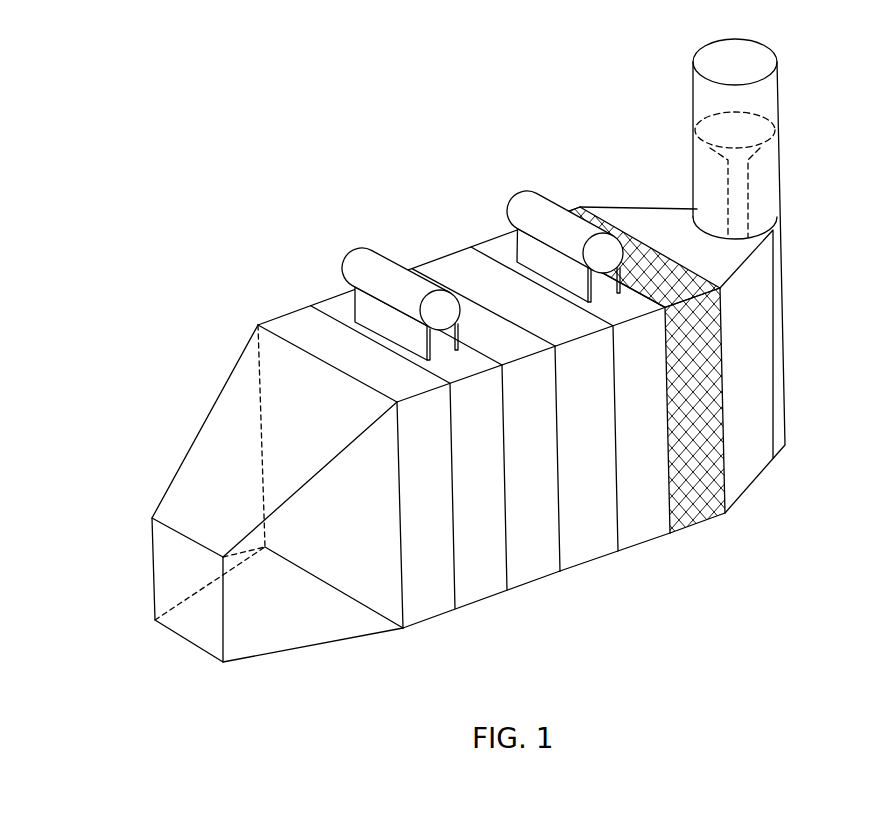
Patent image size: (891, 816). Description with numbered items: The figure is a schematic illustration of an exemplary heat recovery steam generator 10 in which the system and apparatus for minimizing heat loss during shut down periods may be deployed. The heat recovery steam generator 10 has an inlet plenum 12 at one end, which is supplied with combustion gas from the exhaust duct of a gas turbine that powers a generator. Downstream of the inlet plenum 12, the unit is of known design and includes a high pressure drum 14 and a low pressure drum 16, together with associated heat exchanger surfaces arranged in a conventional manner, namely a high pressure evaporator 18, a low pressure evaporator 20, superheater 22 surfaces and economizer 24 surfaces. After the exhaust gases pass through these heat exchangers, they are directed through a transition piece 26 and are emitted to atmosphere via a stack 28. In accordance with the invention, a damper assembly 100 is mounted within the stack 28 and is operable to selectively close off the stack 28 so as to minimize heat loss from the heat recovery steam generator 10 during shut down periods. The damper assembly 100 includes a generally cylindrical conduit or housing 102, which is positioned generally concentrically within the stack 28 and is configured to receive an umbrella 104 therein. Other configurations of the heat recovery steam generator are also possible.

The heat recovery steam generator 10 is at (364, 161).
The inlet plenum 12 is at (200, 472).
The high pressure drum 14 is at (373, 257).
The low pressure drum 16 is at (528, 203).
The high pressure evaporator 18 is at (488, 592).
The low pressure evaporator 20 is at (638, 532).
The superheater 22 is at (288, 321).
The economizer 24 is at (697, 507).
The transition piece 26 is at (748, 470).
The stack 28 is at (770, 87).
The damper assembly 100 is at (762, 185).
The conduit 102 is at (738, 205).
The umbrella 104 is at (705, 128).